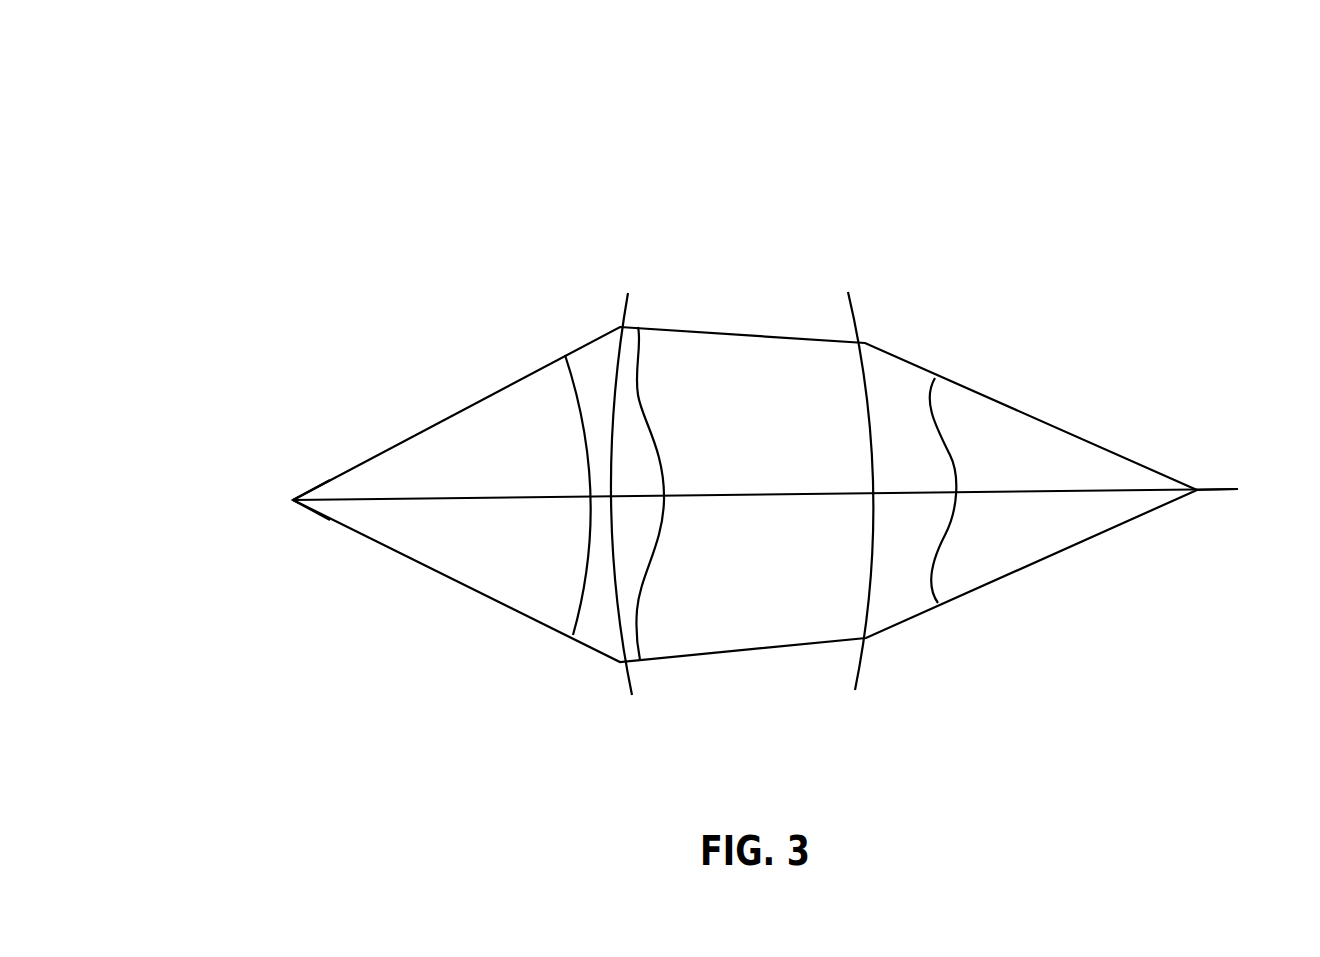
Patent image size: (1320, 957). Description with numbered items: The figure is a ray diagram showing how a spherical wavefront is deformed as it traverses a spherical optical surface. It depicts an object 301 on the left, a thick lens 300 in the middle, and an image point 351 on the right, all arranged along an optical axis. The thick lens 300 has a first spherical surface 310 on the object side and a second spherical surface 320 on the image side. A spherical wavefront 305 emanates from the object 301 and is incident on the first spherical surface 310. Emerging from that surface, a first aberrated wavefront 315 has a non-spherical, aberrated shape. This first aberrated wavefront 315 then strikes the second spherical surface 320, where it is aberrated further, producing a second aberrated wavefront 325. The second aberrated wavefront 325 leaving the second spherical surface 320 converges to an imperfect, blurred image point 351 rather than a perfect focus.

The thick lens 300 is at (731, 197).
The object 301 is at (293, 513).
The spherical wavefront 305 is at (568, 612).
The first spherical surface 310 is at (617, 313).
The first aberrated wavefront 315 is at (645, 632).
The second spherical surface 320 is at (863, 317).
The second aberrated wavefront 325 is at (942, 555).
The image point 351 is at (1218, 497).